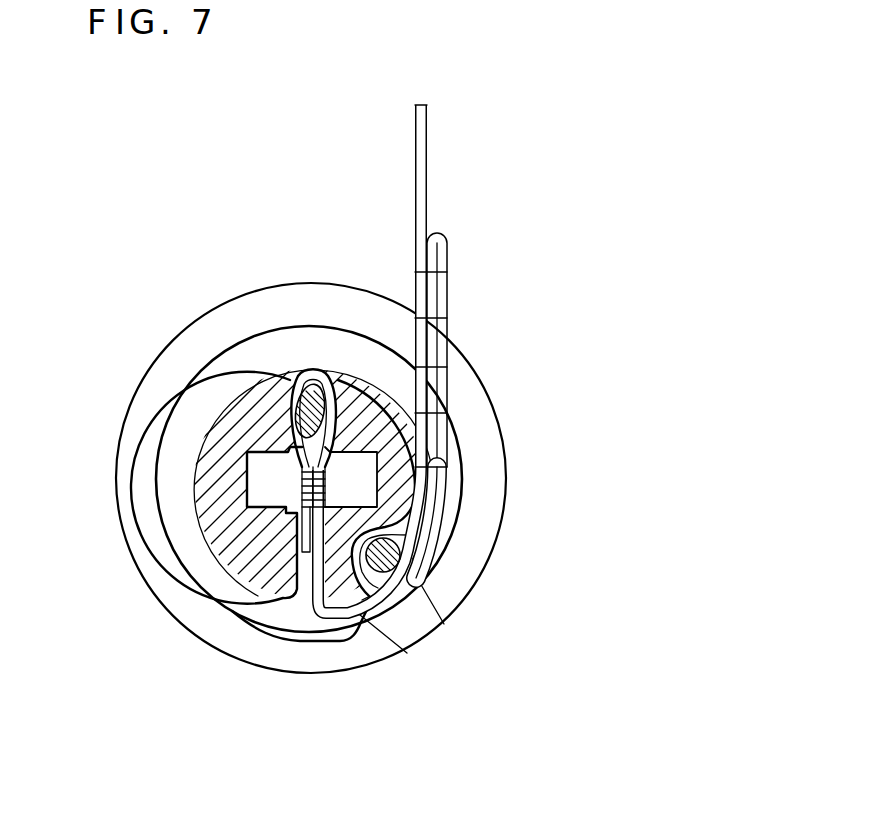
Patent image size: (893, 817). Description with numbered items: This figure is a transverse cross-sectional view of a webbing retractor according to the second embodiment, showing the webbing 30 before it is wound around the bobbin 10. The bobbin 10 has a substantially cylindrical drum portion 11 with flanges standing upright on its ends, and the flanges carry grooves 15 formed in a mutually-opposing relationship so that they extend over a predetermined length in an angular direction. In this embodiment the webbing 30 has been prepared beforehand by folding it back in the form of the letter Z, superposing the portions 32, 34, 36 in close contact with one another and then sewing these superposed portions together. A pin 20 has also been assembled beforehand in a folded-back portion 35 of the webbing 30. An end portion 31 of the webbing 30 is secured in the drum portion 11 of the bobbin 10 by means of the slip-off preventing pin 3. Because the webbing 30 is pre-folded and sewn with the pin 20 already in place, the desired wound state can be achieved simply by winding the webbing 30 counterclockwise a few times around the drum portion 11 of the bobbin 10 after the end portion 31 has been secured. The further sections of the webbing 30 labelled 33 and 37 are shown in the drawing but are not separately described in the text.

The slip-off preventing pin 3 is at (283, 386).
The bobbin 10 is at (136, 380).
The drum portion 11 is at (213, 492).
The grooves 15 is at (200, 578).
The pin 20 is at (400, 566).
The webbing 30 is at (419, 405).
The end portion 31 is at (313, 370).
The superposed portion 32 is at (437, 506).
The strip end 33 is at (434, 236).
The superposed portion 34 is at (432, 393).
The folded-back portion 35 is at (372, 592).
The superposed portion 36 is at (418, 344).
The strip section 37 is at (430, 322).